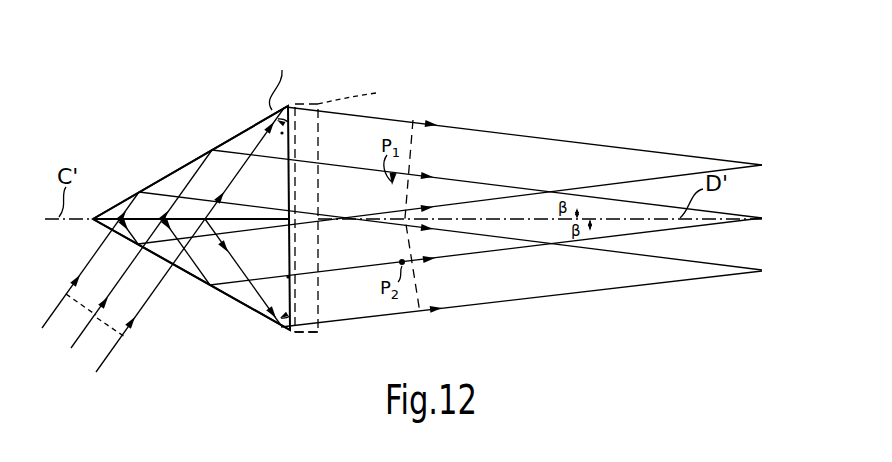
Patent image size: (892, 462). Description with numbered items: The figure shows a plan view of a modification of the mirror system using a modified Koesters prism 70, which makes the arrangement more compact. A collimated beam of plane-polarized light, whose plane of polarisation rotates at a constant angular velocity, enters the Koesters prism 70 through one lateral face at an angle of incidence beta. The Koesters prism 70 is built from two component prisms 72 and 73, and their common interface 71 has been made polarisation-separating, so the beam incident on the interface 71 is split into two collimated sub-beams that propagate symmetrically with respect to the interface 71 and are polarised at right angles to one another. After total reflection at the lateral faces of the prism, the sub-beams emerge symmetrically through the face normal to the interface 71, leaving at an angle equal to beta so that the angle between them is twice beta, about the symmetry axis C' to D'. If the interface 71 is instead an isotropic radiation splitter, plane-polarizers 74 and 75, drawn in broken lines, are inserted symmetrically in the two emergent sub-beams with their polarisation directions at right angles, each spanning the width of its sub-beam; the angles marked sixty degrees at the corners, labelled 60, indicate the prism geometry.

The modified Koesters prism 70 is at (191, 189).
The interface 71 is at (239, 219).
The component prism 72 is at (228, 272).
The component prism 73 is at (214, 164).
The plane-polarizer 74 is at (307, 105).
The plane-polarizer 75 is at (313, 336).
The 60 degree angle 60 is at (281, 124).